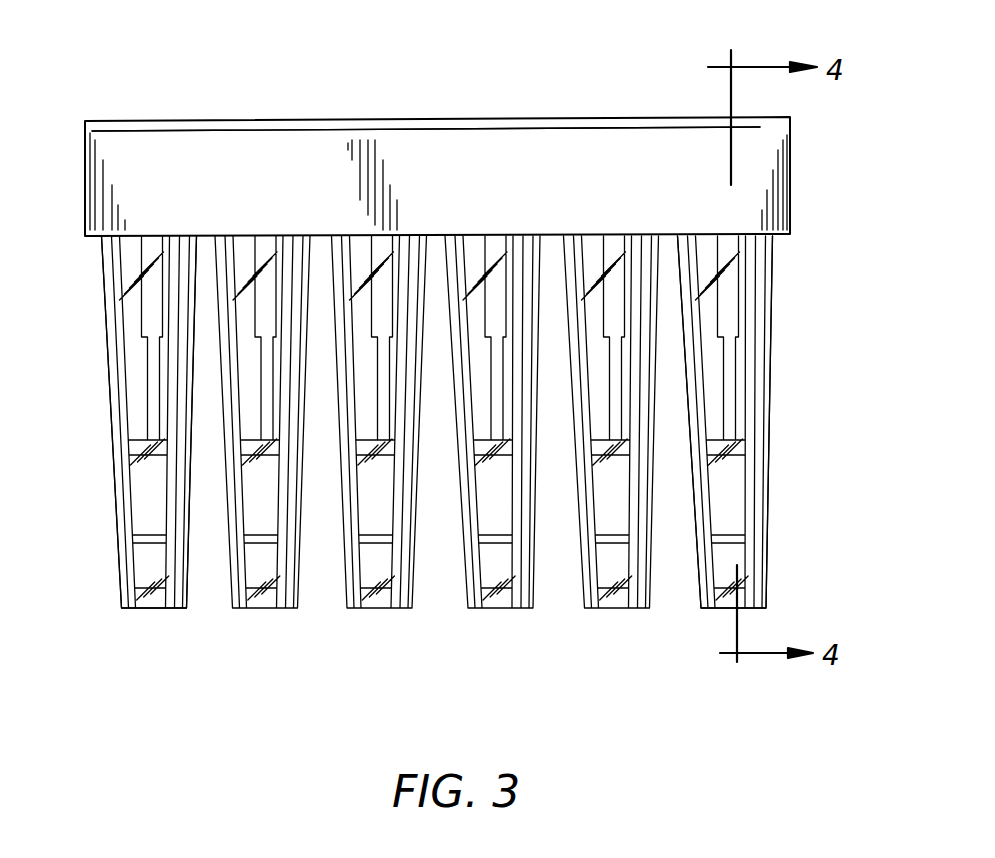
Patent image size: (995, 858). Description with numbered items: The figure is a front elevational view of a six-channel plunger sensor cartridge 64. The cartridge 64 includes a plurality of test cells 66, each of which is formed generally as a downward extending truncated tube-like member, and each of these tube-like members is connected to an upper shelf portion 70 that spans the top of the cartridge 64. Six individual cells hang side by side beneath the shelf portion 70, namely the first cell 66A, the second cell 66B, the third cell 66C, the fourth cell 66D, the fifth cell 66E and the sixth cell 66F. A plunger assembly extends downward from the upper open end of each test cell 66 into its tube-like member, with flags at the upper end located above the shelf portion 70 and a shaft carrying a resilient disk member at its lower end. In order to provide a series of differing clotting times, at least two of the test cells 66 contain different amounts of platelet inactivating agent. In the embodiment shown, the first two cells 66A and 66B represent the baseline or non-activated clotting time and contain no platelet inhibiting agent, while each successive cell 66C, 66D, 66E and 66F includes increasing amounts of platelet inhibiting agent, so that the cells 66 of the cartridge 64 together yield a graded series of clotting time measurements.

The cartridge 64 is at (436, 114).
The upper shelf portion 70 is at (224, 120).
The test cells 66 is at (109, 363).
The first cell 66A is at (150, 610).
The second cell 66B is at (256, 610).
The third cell 66C is at (371, 610).
The fourth cell 66D is at (500, 608).
The fifth cell 66E is at (620, 608).
The sixth cell 66F is at (770, 578).